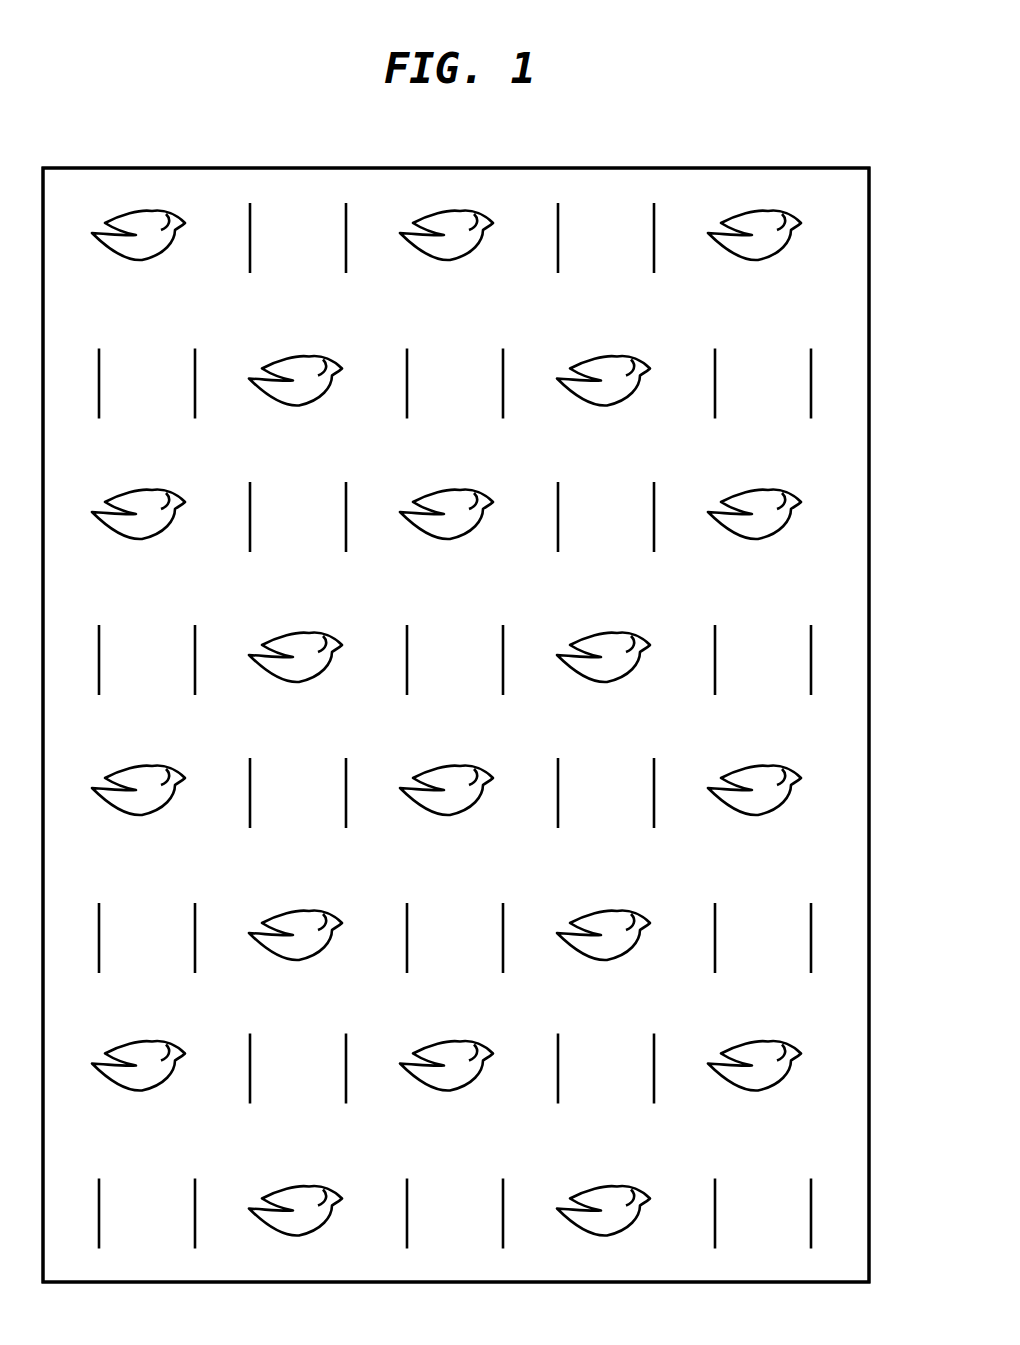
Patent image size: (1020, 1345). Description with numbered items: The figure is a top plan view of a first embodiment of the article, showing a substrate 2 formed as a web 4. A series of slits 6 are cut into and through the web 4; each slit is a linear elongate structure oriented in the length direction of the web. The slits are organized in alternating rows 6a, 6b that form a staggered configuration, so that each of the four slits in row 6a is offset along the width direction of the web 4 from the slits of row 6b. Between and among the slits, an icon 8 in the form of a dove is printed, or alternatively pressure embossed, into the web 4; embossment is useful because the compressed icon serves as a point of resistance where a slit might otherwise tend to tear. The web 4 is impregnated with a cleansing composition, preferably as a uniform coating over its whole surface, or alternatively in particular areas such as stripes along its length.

The substrate 2 is at (775, 152).
The web 4 is at (852, 285).
The slits 6 is at (811, 388).
The row of slits 6a is at (654, 530).
The row of slits 6b is at (811, 665).
The icon 8 is at (478, 810).